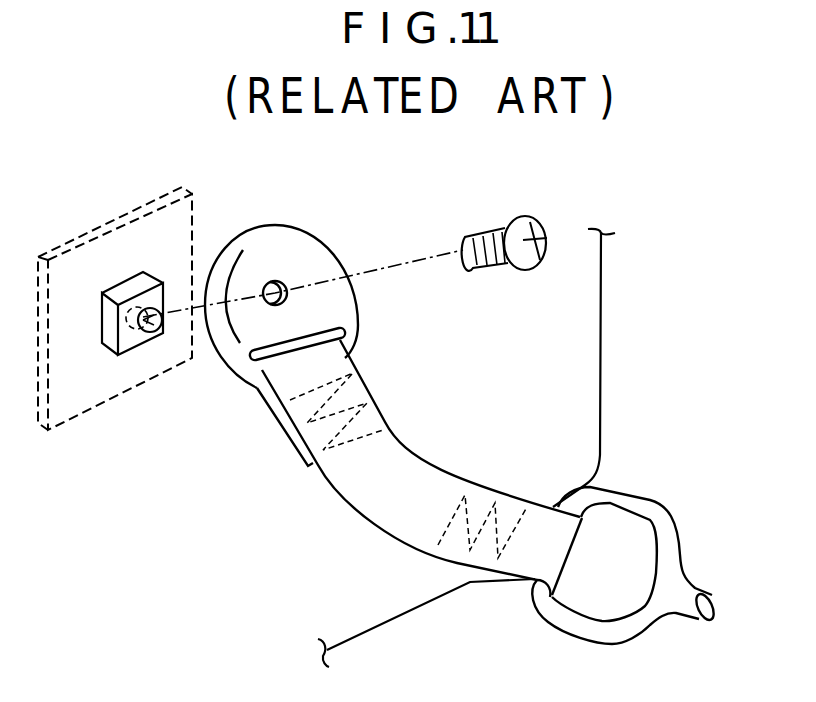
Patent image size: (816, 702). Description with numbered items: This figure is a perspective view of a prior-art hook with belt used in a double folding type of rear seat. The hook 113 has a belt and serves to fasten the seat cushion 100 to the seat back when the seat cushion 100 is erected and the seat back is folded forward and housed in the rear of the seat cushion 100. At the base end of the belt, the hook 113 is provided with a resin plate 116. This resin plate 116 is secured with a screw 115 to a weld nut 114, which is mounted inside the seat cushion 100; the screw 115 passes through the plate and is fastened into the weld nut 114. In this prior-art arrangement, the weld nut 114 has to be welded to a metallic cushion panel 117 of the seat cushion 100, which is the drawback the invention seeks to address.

The seat cushion 100 is at (602, 285).
The hook 113 is at (666, 503).
The weld nut 114 is at (157, 277).
The screw 115 is at (530, 214).
The resin plate 116 is at (313, 257).
The metallic cushion panel 117 is at (583, 388).